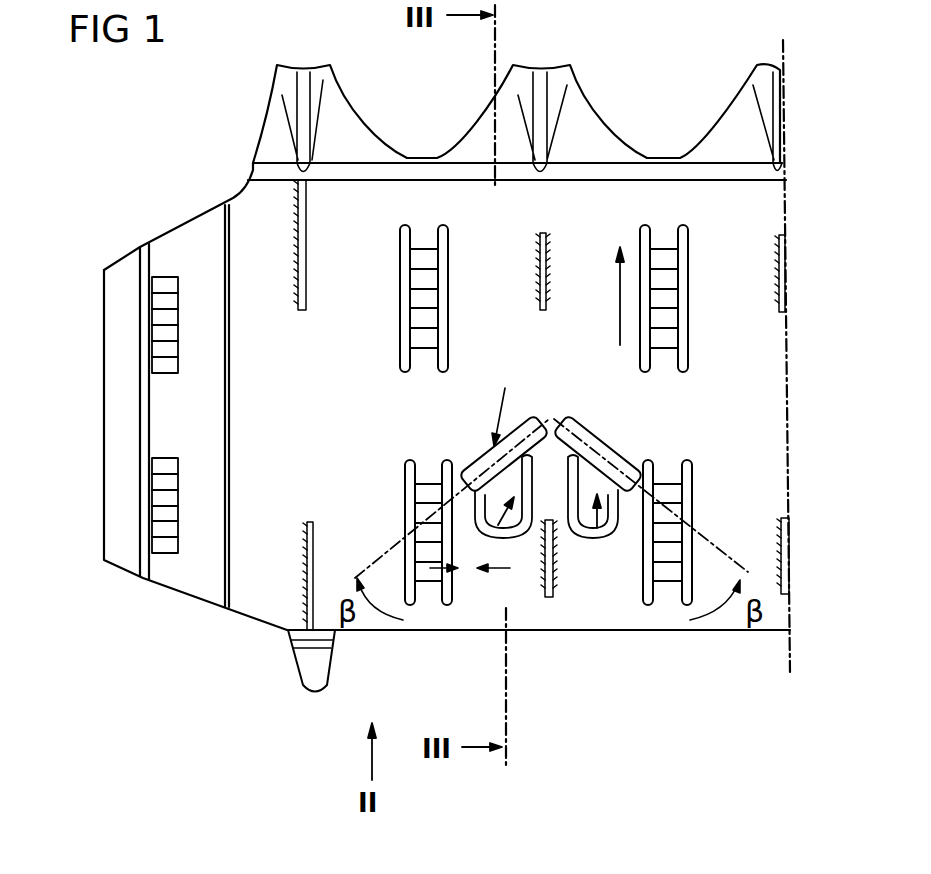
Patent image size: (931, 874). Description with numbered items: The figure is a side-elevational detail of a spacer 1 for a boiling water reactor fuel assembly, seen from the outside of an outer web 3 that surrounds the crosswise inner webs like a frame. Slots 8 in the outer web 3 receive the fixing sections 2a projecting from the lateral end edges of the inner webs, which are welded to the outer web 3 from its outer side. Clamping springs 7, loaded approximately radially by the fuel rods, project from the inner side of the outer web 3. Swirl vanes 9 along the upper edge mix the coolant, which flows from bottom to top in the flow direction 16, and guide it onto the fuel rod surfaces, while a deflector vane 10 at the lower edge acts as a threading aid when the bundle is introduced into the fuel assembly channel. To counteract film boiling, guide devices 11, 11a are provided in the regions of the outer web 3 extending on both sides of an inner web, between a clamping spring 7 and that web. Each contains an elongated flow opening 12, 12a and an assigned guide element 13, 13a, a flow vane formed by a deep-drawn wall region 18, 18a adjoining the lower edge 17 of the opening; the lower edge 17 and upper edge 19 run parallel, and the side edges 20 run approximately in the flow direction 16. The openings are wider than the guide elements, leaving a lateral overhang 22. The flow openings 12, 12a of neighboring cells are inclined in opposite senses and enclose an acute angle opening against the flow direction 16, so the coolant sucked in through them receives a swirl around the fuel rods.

The spacer 1 is at (706, 688).
The fixing section 2a is at (518, 405).
The outer web 3 is at (762, 480).
The clamping spring 7 is at (420, 298).
The slot 8 is at (306, 235).
The swirl vane 9 is at (560, 80).
The deflector vane 10 is at (310, 668).
The guide device 11 is at (481, 439).
The guide device 11a is at (628, 438).
The flow opening 12 is at (497, 430).
The flow opening 12a is at (578, 433).
The guide element 13 is at (497, 510).
The guide element 13a is at (597, 520).
The flow direction 16 is at (618, 310).
The lower edge 17 is at (637, 478).
The deep-drawn wall region 18 is at (528, 587).
The deep-drawn wall region 18a is at (607, 587).
The upper edge 19 is at (506, 402).
The side edge 20 is at (548, 415).
The overhang 22 is at (469, 572).